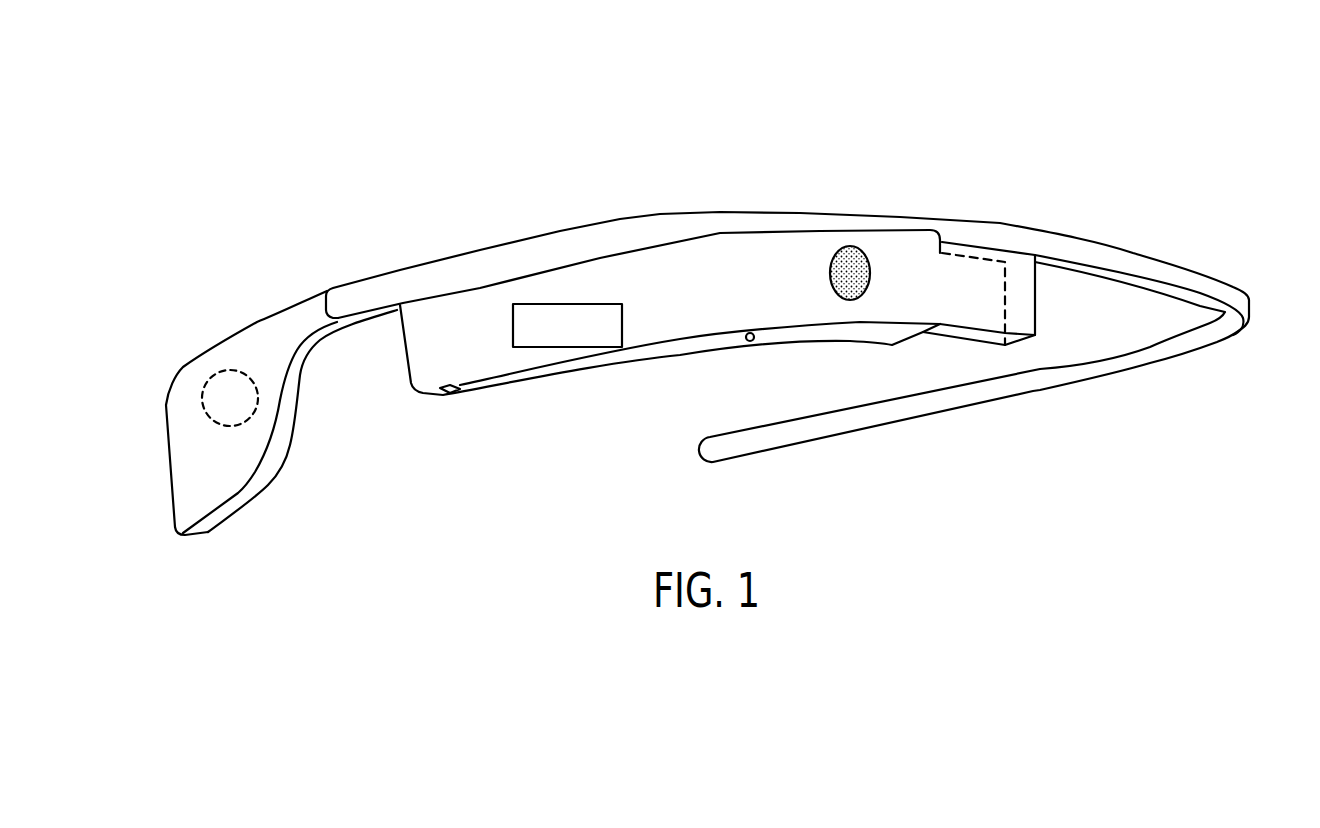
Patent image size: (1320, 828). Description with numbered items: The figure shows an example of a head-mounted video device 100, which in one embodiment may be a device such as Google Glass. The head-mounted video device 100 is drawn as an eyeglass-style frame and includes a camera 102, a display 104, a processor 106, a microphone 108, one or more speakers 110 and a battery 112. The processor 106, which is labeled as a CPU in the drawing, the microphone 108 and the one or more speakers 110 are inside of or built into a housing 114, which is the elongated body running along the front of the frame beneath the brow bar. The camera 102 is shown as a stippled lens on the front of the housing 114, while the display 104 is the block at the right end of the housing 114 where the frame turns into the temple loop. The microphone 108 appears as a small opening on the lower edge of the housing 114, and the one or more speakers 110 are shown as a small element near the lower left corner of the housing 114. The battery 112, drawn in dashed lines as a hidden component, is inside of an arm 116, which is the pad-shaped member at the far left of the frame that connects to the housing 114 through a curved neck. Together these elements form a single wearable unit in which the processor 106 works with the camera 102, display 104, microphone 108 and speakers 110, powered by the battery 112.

The head-mounted video device 100 is at (1178, 140).
The camera 102 is at (850, 248).
The display 104 is at (963, 318).
The processor 106 is at (565, 304).
The microphone 108 is at (751, 342).
The speakers 110 is at (449, 396).
The battery 112 is at (257, 399).
The housing 114 is at (573, 365).
The arm 116 is at (191, 365).